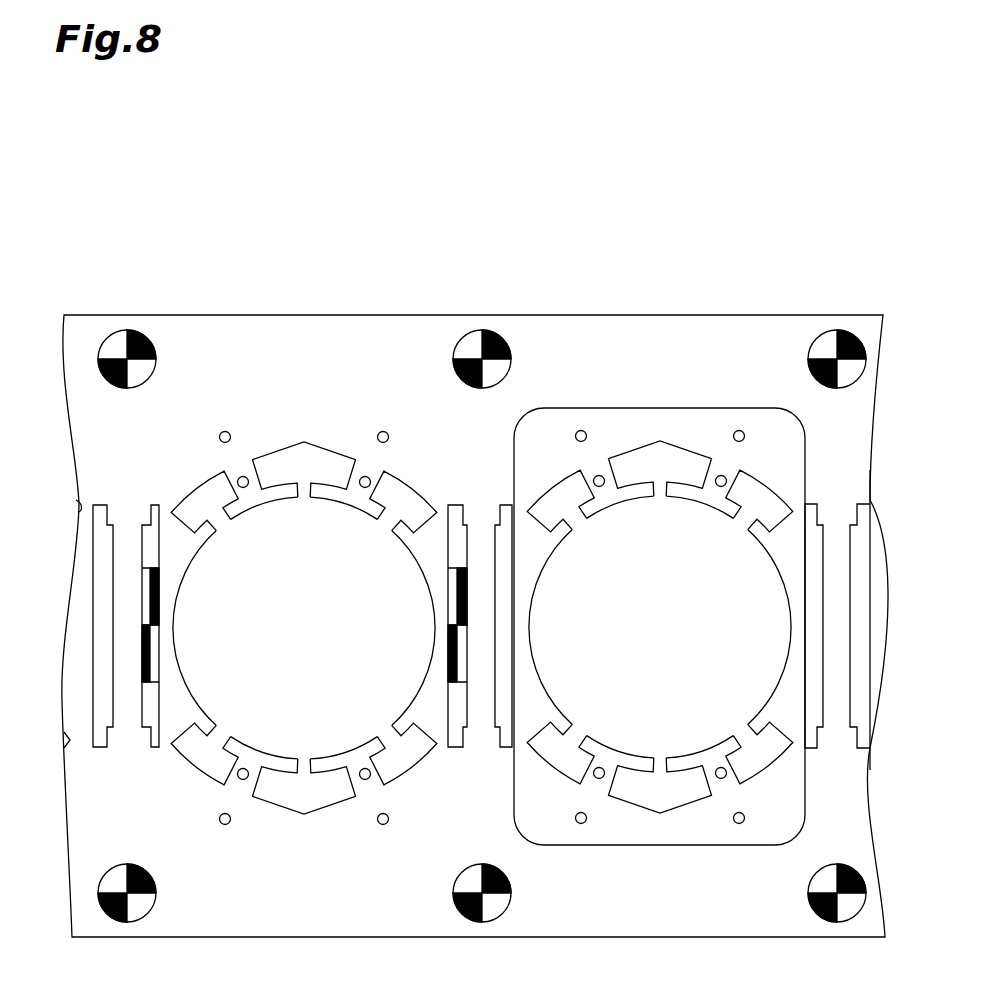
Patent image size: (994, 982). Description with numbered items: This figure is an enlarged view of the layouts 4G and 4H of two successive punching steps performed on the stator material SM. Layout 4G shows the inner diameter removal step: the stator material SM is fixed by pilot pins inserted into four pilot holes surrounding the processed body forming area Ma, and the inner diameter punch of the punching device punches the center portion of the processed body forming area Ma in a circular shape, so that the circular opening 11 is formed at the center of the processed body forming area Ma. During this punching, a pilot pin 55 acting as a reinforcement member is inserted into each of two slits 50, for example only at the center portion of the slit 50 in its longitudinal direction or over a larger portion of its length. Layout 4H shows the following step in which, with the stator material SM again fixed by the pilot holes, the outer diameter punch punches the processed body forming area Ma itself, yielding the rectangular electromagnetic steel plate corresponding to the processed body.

The layout 4G is at (293, 492).
The layout 4H is at (667, 502).
The stator material SM is at (269, 315).
The processed body forming area Ma is at (315, 536).
The opening 11 is at (290, 631).
The slit 50 is at (302, 627).
The pilot pin 55 is at (150, 668).